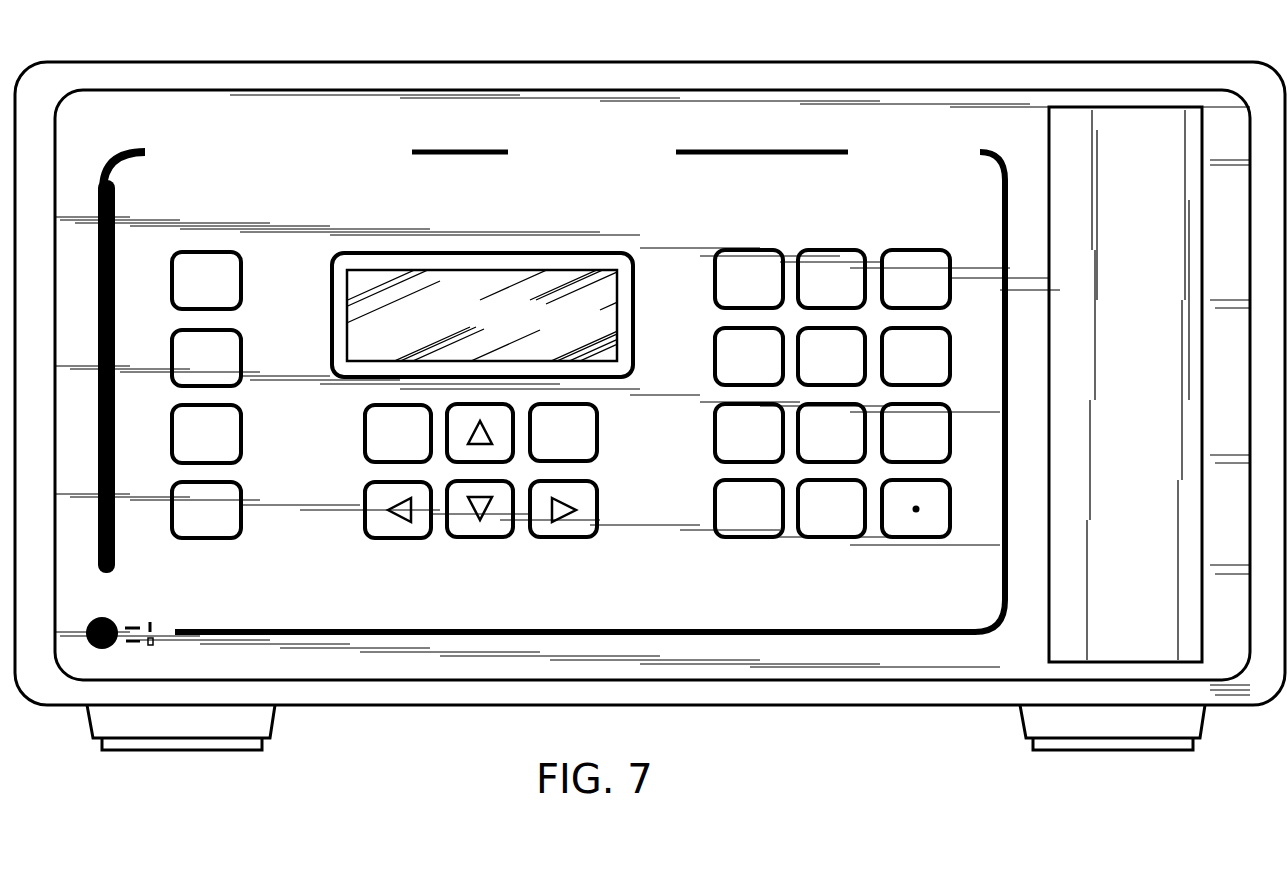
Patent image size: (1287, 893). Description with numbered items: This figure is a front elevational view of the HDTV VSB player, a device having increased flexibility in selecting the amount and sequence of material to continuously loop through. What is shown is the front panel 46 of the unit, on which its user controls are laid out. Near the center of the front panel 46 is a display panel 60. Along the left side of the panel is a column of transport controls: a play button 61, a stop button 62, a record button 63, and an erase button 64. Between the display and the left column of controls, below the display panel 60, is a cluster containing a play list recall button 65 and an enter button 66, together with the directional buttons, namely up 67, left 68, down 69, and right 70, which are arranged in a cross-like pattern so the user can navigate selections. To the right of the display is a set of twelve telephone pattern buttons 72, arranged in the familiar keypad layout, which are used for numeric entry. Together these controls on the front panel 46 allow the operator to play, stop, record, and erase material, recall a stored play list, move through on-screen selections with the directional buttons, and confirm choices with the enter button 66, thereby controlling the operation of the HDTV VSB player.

The front panel 46 is at (920, 76).
The display panel 60 is at (628, 253).
The play button 61 is at (233, 252).
The stop button 62 is at (236, 330).
The record button 63 is at (240, 406).
The erase button 64 is at (238, 482).
The play list recall button 65 is at (372, 402).
The enter button 66 is at (578, 406).
The directional button up 67 is at (466, 405).
The directional button left 68 is at (375, 483).
The directional button down 69 is at (468, 538).
The directional button right 70 is at (573, 538).
The telephone pattern buttons 72 is at (906, 238).